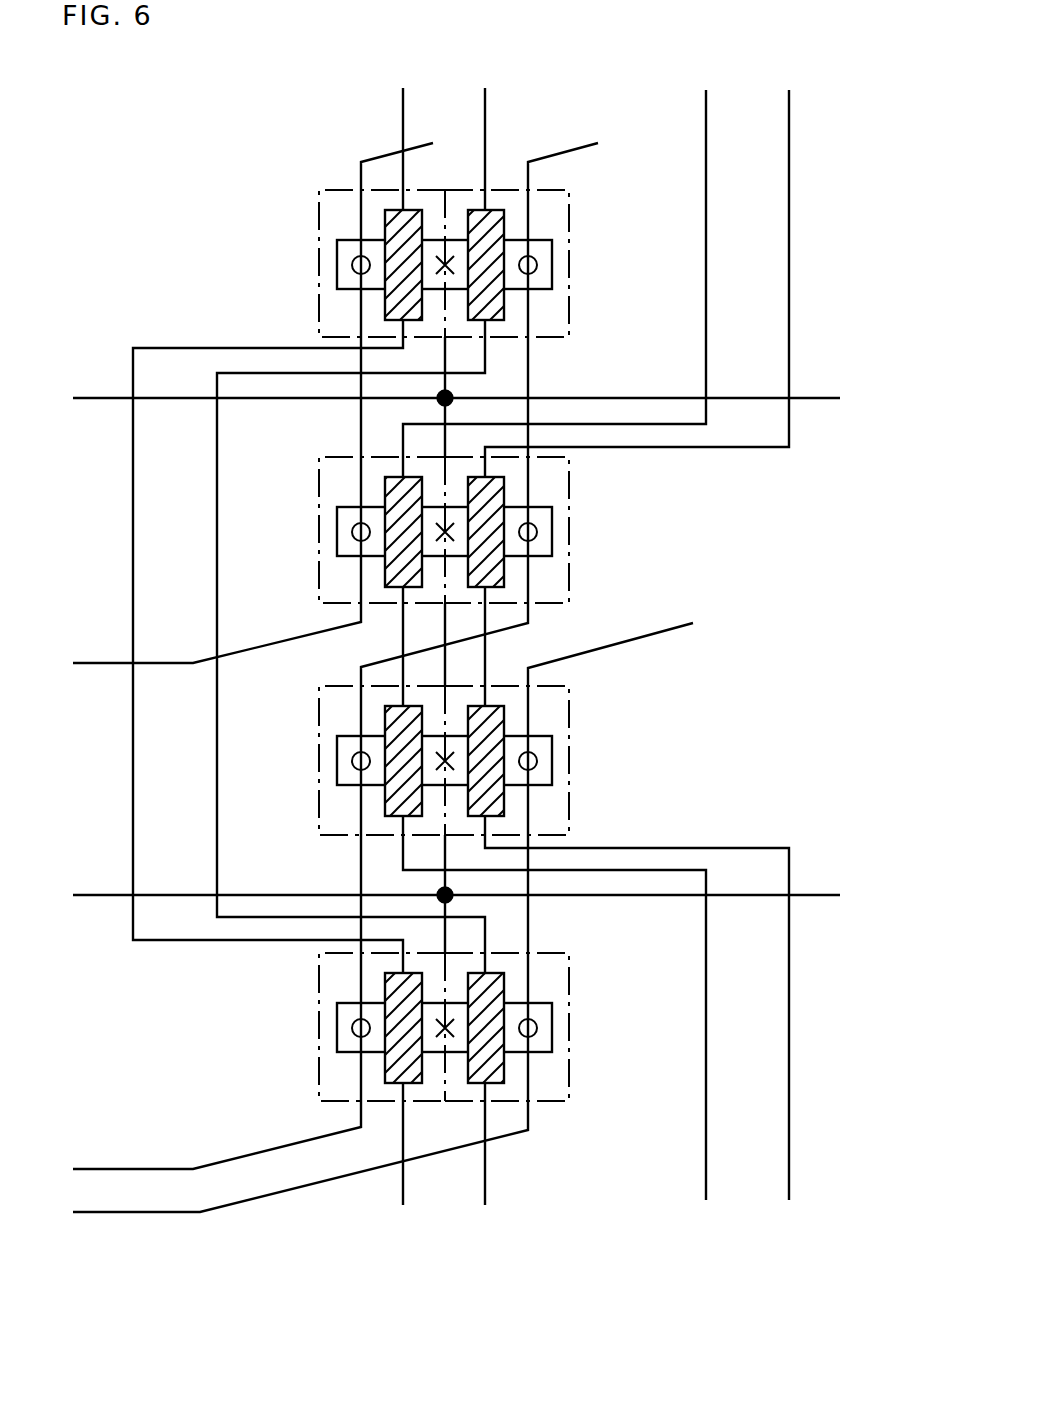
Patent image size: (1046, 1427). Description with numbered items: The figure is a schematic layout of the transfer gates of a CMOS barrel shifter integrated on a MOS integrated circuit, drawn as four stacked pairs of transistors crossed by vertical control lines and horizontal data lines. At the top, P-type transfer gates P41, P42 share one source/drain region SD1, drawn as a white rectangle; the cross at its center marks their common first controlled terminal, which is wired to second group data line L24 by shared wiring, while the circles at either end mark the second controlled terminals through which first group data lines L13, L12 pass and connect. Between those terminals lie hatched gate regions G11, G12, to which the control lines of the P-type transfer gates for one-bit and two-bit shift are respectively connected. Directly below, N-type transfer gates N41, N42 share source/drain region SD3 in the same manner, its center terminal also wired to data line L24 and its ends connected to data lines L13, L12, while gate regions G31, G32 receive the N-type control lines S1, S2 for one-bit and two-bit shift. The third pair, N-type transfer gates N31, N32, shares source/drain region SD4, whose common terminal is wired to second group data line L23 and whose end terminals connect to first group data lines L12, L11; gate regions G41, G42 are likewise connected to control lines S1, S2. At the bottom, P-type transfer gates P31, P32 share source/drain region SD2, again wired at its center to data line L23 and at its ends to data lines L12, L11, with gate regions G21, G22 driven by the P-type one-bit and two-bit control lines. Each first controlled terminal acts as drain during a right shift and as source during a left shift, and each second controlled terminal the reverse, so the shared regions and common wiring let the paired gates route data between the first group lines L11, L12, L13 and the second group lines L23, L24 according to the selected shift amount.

The P-type transfer gate P41 is at (320, 215).
The P-type transfer gate P42 is at (572, 215).
The N-type transfer gate N41 is at (318, 486).
The N-type transfer gate N42 is at (569, 500).
The N-type transfer gate N31 is at (318, 736).
The N-type transfer gate N32 is at (569, 732).
The P-type transfer gate P31 is at (318, 1030).
The P-type transfer gate P32 is at (570, 1000).
The gate region G11 is at (387, 303).
The gate region G12 is at (503, 313).
The gate region G31 is at (387, 570).
The gate region G32 is at (500, 580).
The gate region G41 is at (387, 802).
The gate region G42 is at (498, 803).
The gate region G21 is at (385, 1075).
The gate region G22 is at (503, 1077).
The shared source/drain region SD1 is at (543, 272).
The shared source/drain region SD3 is at (543, 539).
The shared source/drain region SD4 is at (543, 752).
The shared source/drain region SD2 is at (543, 1039).
The second group data line L24 is at (827, 402).
The second group data line L23 is at (827, 900).
The first group data line L13 is at (93, 668).
The first group data line L12 is at (128, 1165).
The first group data line L11 is at (128, 1215).
The control line of N-type transfer gate for 1-bit shift S1 is at (566, 628).
The control line of N-type transfer gate for 2-bit shift S2 is at (649, 628).